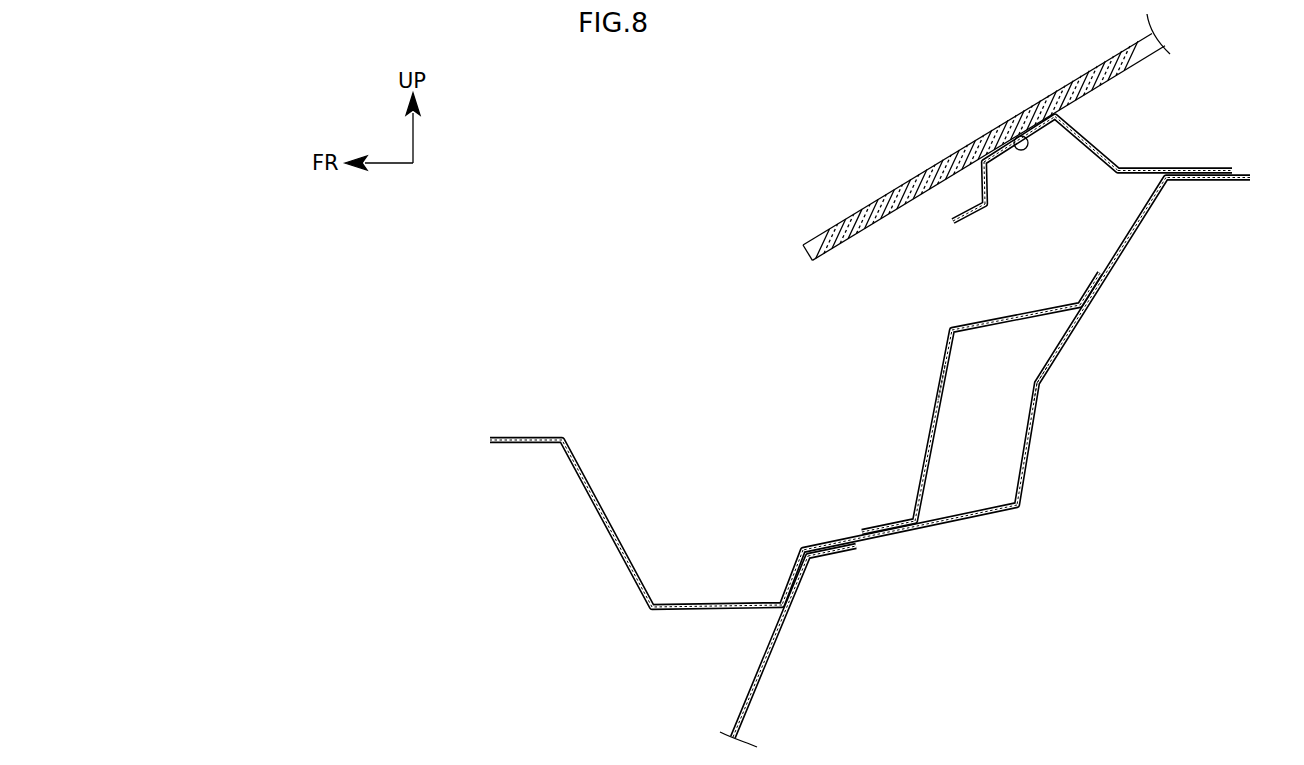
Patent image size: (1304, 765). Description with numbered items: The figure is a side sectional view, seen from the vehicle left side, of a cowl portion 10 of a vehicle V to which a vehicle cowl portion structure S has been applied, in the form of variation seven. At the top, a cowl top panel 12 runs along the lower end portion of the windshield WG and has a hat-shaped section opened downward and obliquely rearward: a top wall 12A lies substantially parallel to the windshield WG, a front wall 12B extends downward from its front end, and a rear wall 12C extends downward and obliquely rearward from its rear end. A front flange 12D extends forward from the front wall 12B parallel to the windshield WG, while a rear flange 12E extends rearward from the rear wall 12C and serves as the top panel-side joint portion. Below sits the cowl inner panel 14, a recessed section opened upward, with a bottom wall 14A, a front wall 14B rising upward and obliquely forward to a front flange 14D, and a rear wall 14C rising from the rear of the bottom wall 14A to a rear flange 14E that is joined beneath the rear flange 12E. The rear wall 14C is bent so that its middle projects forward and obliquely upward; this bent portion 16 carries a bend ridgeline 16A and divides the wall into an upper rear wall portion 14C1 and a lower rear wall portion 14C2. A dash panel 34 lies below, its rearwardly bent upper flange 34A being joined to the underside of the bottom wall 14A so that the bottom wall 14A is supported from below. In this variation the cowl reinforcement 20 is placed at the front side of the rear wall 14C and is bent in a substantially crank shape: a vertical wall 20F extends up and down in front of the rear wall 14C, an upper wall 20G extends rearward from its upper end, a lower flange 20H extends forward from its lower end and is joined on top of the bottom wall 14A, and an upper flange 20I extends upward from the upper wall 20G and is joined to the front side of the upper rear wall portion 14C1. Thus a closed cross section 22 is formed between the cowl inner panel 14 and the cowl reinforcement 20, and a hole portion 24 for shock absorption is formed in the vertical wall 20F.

The cowl portion 10 is at (688, 342).
The cowl top panel 12 is at (1113, 157).
The top wall 12A is at (1020, 135).
The front wall 12B is at (980, 183).
The rear wall 12C is at (1088, 134).
The front flange 12D is at (952, 213).
The rear flange 12E is at (1210, 168).
The cowl inner panel 14 is at (619, 530).
The bottom wall 14A is at (822, 545).
The front wall 14B is at (585, 480).
The rear wall 14C is at (1155, 342).
The upper rear wall portion 14C1 is at (1132, 245).
The lower rear wall portion 14C2 is at (1032, 443).
The front flange 14D is at (530, 437).
The rear flange 14E is at (1200, 181).
The bent portion 16 is at (1040, 387).
The bend ridgeline 16A is at (1040, 384).
The cowl reinforcement 20 is at (949, 326).
The vertical wall 20F is at (947, 356).
The upper wall 20G is at (1017, 318).
The lower flange 20H is at (890, 526).
The upper flange 20I is at (1087, 289).
The closed cross section 22 is at (998, 428).
The hole portion 24 is at (940, 381).
The dash panel 34 is at (768, 663).
The upper flange 34A is at (837, 553).
The windshield WG is at (1087, 72).
The vehicle V is at (805, 137).
The vehicle cowl portion structure S is at (708, 255).